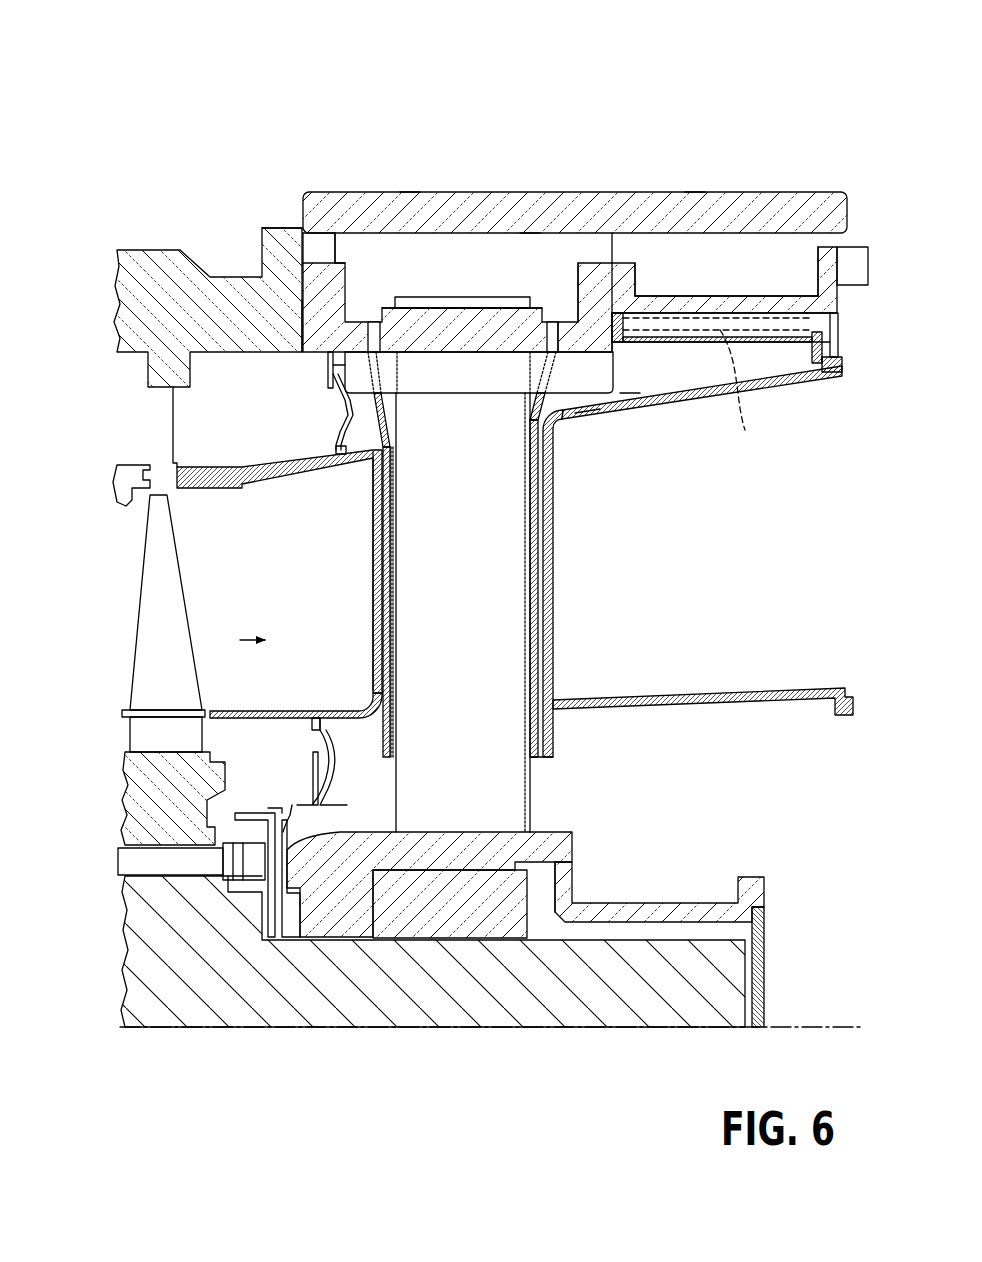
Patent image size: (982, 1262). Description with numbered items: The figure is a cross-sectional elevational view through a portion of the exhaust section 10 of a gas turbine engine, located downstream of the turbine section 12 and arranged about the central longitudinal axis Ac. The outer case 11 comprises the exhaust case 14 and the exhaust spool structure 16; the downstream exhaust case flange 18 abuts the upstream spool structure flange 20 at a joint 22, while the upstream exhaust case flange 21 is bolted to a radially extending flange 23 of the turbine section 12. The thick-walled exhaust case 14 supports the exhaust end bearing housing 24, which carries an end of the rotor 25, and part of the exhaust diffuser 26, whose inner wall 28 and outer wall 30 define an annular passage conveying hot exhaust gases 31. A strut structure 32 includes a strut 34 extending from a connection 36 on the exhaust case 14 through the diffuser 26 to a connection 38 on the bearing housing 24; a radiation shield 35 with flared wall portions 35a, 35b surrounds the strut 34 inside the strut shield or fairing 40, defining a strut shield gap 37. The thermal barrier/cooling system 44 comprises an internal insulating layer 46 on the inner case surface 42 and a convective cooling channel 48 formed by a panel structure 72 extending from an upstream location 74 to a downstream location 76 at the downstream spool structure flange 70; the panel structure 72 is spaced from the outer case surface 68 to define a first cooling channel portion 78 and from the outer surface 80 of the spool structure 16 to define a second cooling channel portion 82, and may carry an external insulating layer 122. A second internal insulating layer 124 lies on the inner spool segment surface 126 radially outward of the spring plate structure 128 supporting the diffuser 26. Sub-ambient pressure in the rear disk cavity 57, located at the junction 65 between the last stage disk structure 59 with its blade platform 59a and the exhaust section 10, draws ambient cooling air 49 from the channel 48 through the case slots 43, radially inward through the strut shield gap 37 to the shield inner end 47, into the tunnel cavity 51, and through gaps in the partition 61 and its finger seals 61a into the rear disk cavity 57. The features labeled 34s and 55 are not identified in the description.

The exhaust section 10 is at (553, 105).
The outer case 11 is at (295, 332).
The turbine section 12 is at (140, 455).
The exhaust case 14 is at (310, 258).
The exhaust spool structure 16 is at (780, 292).
The downstream exhaust case flange 18 is at (585, 265).
The upstream spool structure flange 20 is at (632, 277).
The upstream exhaust case flange 21 is at (314, 265).
The joint 22 is at (618, 262).
The radially extending flange 23 is at (270, 240).
The exhaust end bearing housing 24 is at (557, 832).
The rotor 25 is at (138, 735).
The exhaust diffuser 26 is at (652, 710).
The inner wall 28 is at (765, 690).
The outer wall 30 is at (675, 400).
The hot exhaust gases 31 is at (240, 640).
The strut structure 32 is at (556, 610).
The strut 34 is at (400, 430).
The column 34s is at (463, 612).
The radiation shield 35 is at (380, 652).
The flared wall portion 35a is at (378, 408).
The flared wall portion 35b is at (572, 405).
The connection 36 is at (385, 300).
The strut shield gap 37 is at (390, 578).
The connection 38 is at (400, 833).
The strut shield or fairing 40 is at (375, 520).
The inner case surface 42 is at (633, 396).
The case slots 43 is at (374, 318).
The thermal barrier/cooling system 44 is at (455, 210).
The internal insulating layer 46 is at (586, 400).
The shield inner end 47 is at (542, 755).
The convective cooling channel 48 is at (530, 200).
The ambient cooling air 49 is at (382, 795).
The tunnel cavity 51 is at (433, 918).
The seal strip 55 is at (362, 800).
The rear disk cavity 57 is at (272, 790).
The last stage disk structure 59 is at (115, 790).
The blade platform 59a is at (172, 706).
The partition 61 is at (288, 848).
The finger seal 61a is at (330, 712).
The junction 65 is at (212, 712).
The outer case surface 68 is at (560, 320).
The downstream spool structure flange 70 is at (818, 260).
The panel structure 72 is at (410, 195).
The upstream location 74 is at (305, 237).
The downstream location 76 is at (842, 232).
The first cooling channel portion 78 is at (462, 281).
The outer surface 80 is at (740, 298).
The second cooling channel portion 82 is at (726, 279).
The external insulating layer 122 is at (695, 200).
The second internal insulating layer 124 is at (717, 376).
The inner spool segment surface 126 is at (790, 320).
The spring plate structure 128 is at (685, 345).
The central longitudinal axis Ac is at (807, 1005).